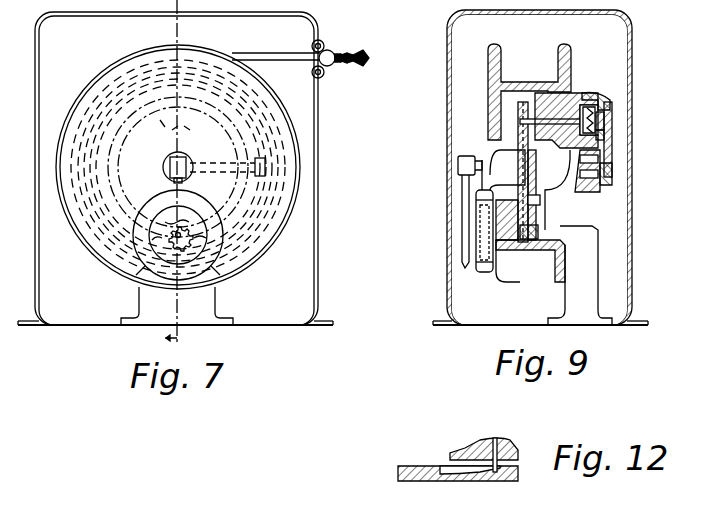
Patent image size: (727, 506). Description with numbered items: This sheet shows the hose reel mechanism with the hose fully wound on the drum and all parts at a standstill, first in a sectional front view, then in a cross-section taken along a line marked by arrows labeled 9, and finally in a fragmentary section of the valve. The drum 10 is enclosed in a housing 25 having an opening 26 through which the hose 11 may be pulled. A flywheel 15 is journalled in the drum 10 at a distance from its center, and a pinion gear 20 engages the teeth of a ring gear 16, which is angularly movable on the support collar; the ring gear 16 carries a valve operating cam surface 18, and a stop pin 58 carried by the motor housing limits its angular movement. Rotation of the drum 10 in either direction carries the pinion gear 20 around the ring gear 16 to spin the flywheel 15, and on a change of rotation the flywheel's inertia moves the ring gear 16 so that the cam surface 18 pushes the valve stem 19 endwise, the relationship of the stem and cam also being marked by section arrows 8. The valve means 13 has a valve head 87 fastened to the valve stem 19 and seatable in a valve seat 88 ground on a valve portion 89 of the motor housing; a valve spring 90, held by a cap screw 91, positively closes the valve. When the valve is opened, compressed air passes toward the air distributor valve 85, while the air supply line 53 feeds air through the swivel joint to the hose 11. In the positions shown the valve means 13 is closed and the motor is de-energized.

In FIG. 7, the hub / section line 8 is at (213, 157).
In FIG. 7, the section line 9 is at (162, 339).
In FIG. 7, the drum 10 is at (284, 110).
In FIG. 9, the drum 10 is at (560, 285).
In FIG. 7, the hose 11 is at (292, 53).
In FIG. 9, the valve means 13 is at (610, 115).
In FIG. 7, the flywheel 15 is at (204, 252).
In FIG. 9, the flywheel 15 is at (480, 275).
In FIG. 7, the ring gear 16 is at (215, 205).
In FIG. 9, the ring gear 16 is at (518, 106).
In FIG. 9, the valve operating cam surface 18 is at (520, 121).
In FIG. 12, the valve operating cam surface 18 is at (480, 481).
In FIG. 7, the valve stem 19 is at (170, 112).
In FIG. 9, the valve stem 19 is at (549, 95).
In FIG. 12, the valve stem 19 is at (494, 444).
In FIG. 7, the pinion gear 20 is at (126, 282).
In FIG. 9, the pinion gear 20 is at (530, 258).
In FIG. 7, the housing 25 is at (318, 200).
In FIG. 9, the housing 25 is at (632, 232).
In FIG. 7, the opening 26 is at (324, 45).
In FIG. 9, the air supply line 53 is at (462, 210).
In FIG. 7, the stop pin 58 is at (205, 212).
In FIG. 9, the stop pin 58 is at (540, 200).
In FIG. 9, the air distributor valve 85 is at (612, 172).
In FIG. 9, the valve head 87 is at (618, 88).
In FIG. 9, the valve seat 88 is at (548, 148).
In FIG. 9, the valve portion 89 is at (600, 105).
In FIG. 9, the valve spring 90 is at (604, 124).
In FIG. 9, the cap screw 91 is at (604, 137).